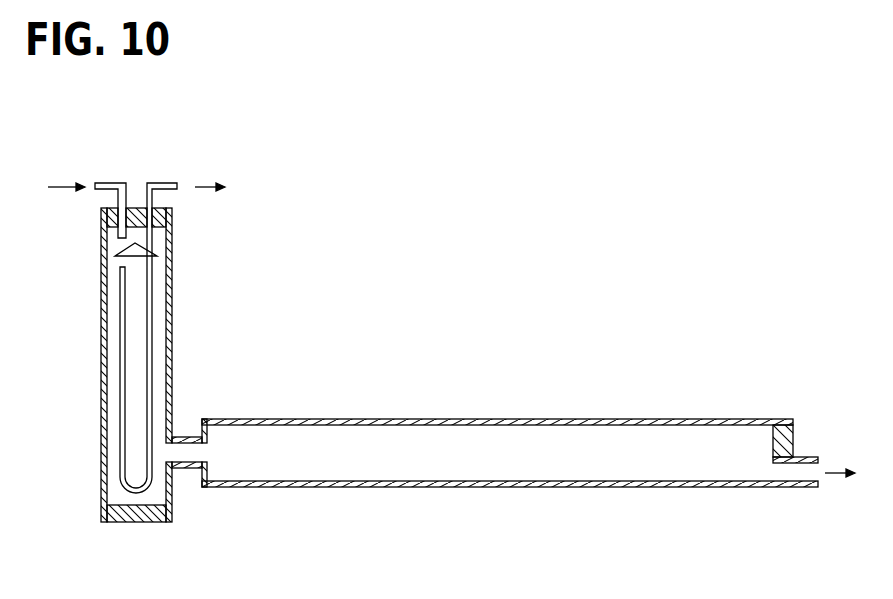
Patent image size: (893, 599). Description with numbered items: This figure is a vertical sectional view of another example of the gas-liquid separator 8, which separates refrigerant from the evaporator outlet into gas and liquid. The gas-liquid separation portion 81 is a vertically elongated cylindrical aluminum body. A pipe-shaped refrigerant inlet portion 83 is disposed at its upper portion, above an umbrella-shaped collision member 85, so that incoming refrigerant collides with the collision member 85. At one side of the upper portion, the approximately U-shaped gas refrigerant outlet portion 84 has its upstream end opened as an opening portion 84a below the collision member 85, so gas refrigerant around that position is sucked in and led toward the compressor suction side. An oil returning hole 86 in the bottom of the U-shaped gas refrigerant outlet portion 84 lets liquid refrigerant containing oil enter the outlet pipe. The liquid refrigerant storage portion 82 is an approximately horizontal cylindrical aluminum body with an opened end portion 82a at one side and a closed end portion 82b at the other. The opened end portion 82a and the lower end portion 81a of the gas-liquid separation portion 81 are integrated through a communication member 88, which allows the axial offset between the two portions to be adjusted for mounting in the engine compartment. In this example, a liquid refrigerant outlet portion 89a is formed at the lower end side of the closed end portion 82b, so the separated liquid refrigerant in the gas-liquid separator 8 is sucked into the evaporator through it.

The gas-liquid separator 8 is at (380, 490).
The gas-liquid separation portion 81 is at (172, 290).
The lower end portion of the gas-liquid separation portion 81a is at (172, 513).
The liquid refrigerant storage portion 82 is at (431, 419).
The opened end portion 82a is at (235, 419).
The closed end portion 82b is at (760, 419).
The refrigerant inlet portion 83 is at (98, 183).
The gas refrigerant outlet portion 84 is at (167, 183).
The opening portion 84a is at (125, 274).
The collision member 85 is at (137, 225).
The oil returning hole 86 is at (135, 494).
The communication member 88 is at (184, 469).
The liquid refrigerant outlet portion 89a is at (812, 457).